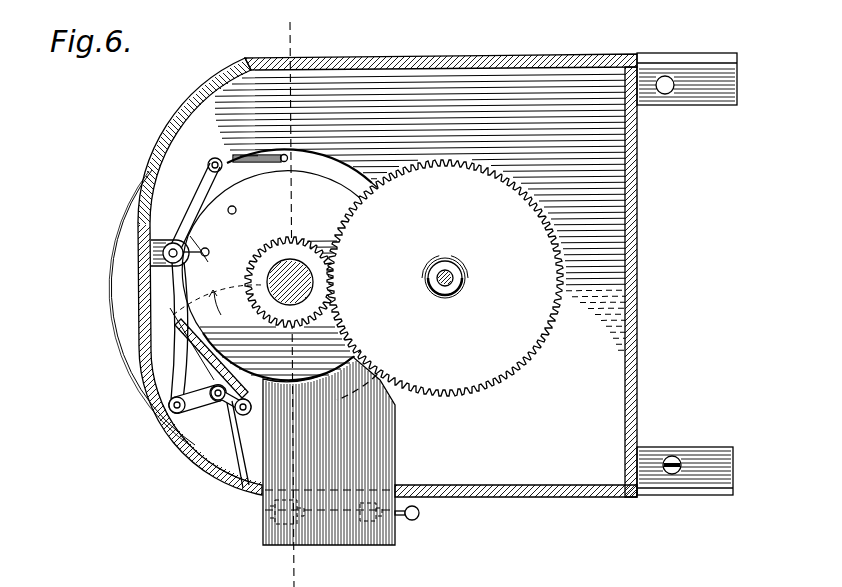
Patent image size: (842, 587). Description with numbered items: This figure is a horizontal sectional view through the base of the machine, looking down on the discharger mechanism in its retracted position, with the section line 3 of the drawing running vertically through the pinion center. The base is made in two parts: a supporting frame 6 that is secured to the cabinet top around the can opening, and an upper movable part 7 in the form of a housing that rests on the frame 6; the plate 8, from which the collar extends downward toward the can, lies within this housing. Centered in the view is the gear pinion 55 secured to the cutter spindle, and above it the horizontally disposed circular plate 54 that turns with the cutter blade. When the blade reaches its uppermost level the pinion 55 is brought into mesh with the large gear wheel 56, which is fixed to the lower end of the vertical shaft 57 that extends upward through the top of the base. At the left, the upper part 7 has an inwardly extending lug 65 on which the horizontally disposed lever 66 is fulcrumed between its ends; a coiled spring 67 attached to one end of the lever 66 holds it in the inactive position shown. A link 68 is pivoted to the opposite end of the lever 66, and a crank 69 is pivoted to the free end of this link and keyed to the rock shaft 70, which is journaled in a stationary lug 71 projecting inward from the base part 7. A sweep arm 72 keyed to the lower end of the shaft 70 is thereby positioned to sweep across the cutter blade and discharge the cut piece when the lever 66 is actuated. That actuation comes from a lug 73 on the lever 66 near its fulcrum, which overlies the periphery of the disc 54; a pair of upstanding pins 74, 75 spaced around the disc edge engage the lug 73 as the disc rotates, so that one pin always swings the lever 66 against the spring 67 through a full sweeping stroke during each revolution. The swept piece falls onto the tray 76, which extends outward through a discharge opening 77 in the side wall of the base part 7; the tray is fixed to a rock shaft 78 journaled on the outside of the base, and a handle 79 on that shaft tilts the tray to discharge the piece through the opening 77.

The section line 3 is at (290, 297).
The supporting frame 6 is at (650, 97).
The upper movable part 7 is at (398, 58).
The plate 8 is at (597, 362).
The circular plate 54 is at (340, 145).
The gear pinion 55 is at (300, 256).
The gear wheel 56 is at (410, 168).
The vertical shaft 57 is at (455, 278).
The lug 65 is at (165, 246).
The lever 66 is at (191, 213).
The coiled spring 67 is at (248, 155).
The link 68 is at (197, 414).
The crank 69 is at (230, 421).
The rock shaft 70 is at (253, 410).
The stationary lug 71 is at (227, 457).
The sweep arm 72 is at (225, 342).
The lug 73 is at (195, 246).
The upstanding pin 74 is at (209, 253).
The upstanding pin 75 is at (237, 209).
The tray 76 is at (335, 545).
The discharge opening 77 is at (385, 490).
The rock shaft 78 is at (313, 515).
The handle 79 is at (420, 515).